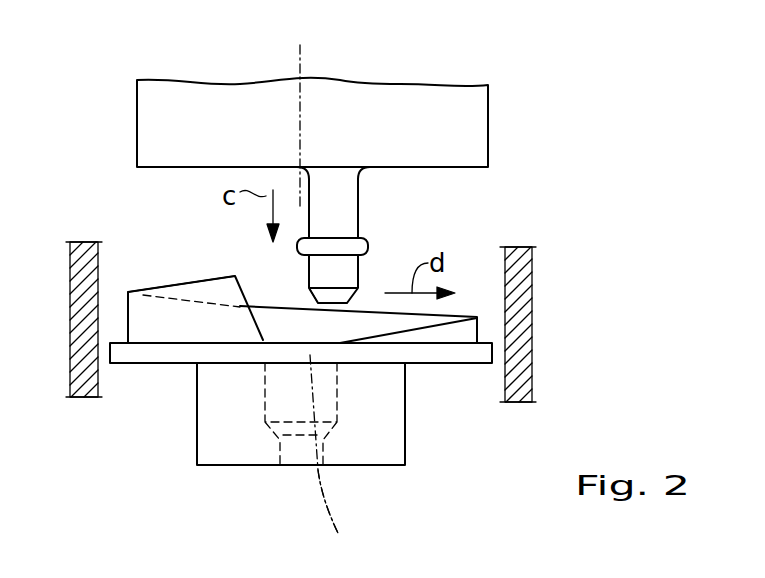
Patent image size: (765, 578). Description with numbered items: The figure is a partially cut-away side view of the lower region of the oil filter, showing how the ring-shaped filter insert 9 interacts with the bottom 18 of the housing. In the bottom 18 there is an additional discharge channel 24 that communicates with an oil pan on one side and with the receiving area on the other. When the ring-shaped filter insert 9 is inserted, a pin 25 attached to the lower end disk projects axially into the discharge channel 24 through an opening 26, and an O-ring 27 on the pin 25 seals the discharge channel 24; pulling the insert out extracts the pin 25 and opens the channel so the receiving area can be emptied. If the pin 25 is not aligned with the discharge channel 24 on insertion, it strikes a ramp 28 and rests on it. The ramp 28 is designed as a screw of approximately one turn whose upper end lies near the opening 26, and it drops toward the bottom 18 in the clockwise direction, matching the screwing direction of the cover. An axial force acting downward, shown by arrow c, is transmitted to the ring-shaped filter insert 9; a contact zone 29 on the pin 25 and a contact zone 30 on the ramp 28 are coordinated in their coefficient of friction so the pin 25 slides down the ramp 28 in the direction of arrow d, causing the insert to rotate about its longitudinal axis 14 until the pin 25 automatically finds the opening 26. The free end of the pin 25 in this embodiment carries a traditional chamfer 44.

The ring-shaped filter insert 9 is at (458, 120).
The longitudinal axis 14 is at (300, 41).
The bottom 18 is at (142, 352).
The discharge channel 24 is at (351, 512).
The pin 25 is at (340, 268).
The opening 26 is at (323, 367).
The O-ring 27 is at (340, 250).
The ramp 28 is at (212, 292).
The contact zone 29 is at (330, 303).
The contact zone 30 is at (150, 292).
The chamfer 44 is at (307, 302).